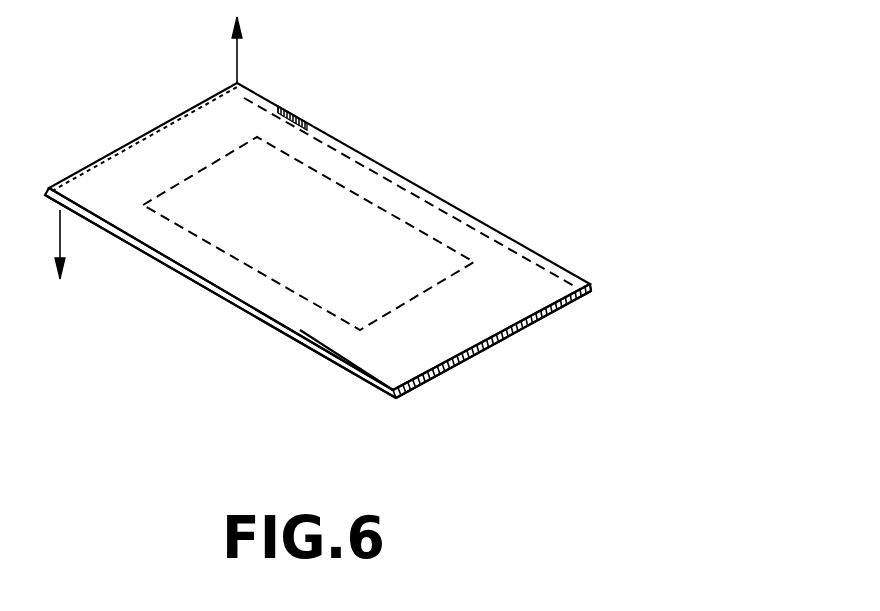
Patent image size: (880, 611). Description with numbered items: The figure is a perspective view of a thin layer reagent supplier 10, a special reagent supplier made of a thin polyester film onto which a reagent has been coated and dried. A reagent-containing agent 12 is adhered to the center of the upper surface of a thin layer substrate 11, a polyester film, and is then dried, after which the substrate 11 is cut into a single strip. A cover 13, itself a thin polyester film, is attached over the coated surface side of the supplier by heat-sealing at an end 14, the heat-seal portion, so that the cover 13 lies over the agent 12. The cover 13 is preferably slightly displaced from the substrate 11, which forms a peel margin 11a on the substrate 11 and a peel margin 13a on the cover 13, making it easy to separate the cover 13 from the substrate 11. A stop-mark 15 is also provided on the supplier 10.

The thin layer reagent supplier 10 is at (414, 163).
The thin layer substrate 11 is at (240, 106).
The peel margin 11a is at (448, 207).
The reagent-containing agent 12 is at (344, 200).
The cover 13 is at (181, 277).
The peel margin 13a is at (341, 360).
The heat-seal portion 14 is at (492, 343).
The stop-mark 15 is at (302, 112).